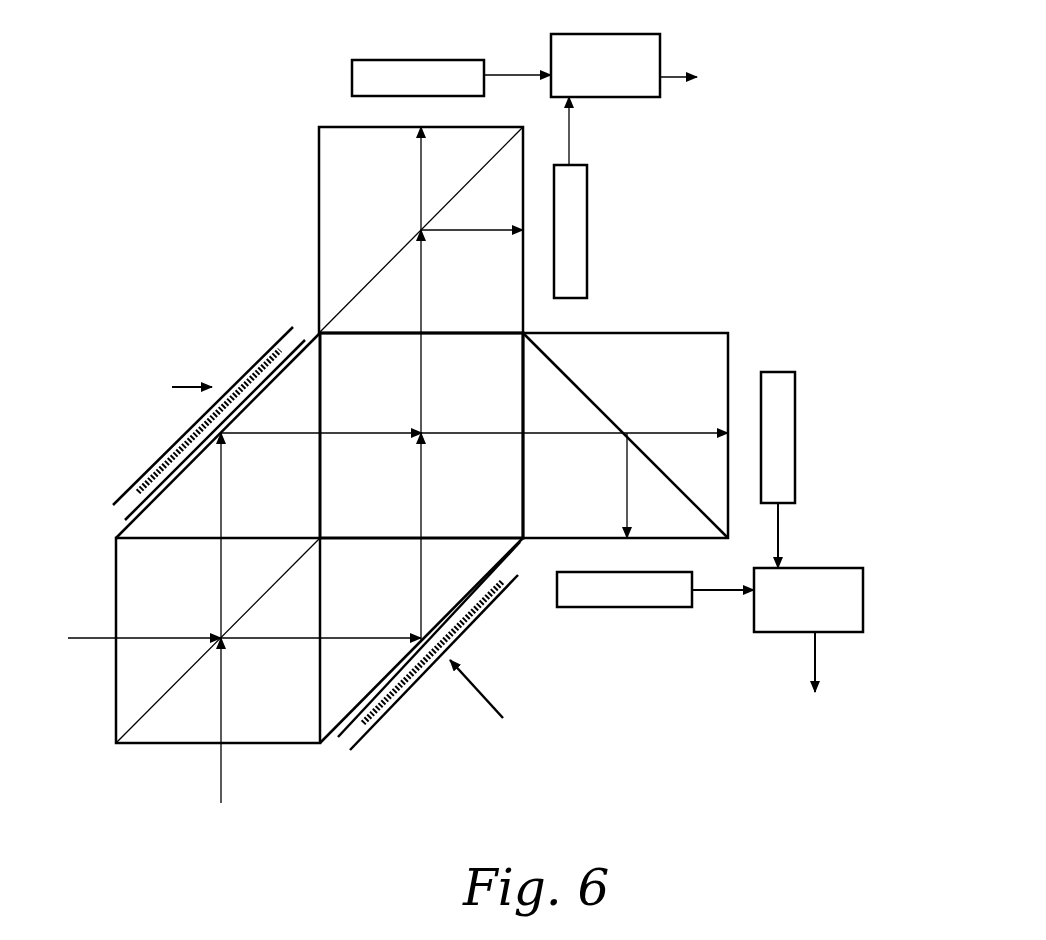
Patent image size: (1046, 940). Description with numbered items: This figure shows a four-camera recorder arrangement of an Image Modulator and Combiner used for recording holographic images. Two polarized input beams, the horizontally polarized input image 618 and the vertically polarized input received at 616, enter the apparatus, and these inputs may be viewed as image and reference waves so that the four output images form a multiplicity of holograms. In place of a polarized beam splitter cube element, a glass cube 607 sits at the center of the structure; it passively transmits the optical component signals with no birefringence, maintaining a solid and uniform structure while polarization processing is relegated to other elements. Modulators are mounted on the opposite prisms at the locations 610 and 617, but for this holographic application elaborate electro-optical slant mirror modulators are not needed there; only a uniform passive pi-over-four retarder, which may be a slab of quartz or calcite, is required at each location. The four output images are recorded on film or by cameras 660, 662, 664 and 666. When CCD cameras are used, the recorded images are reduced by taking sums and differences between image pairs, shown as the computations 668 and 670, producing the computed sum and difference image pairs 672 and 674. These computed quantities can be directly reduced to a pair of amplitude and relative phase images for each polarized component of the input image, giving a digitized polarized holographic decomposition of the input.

The glass cube 607 is at (332, 354).
The slant mirror modulator location 610 is at (345, 737).
The input image location 616 is at (222, 762).
The slant mirror modulator location 617 is at (122, 510).
The horizontal input image beam 618 is at (96, 637).
The camera 660 is at (327, 70).
The camera 662 is at (560, 307).
The camera 664 is at (768, 360).
The camera 666 is at (547, 590).
The sum and difference computation 668 is at (608, 97).
The sum and difference computation 670 is at (838, 568).
The computed sum and difference image pair 672 is at (768, 105).
The computed sum and difference image pair 674 is at (822, 725).